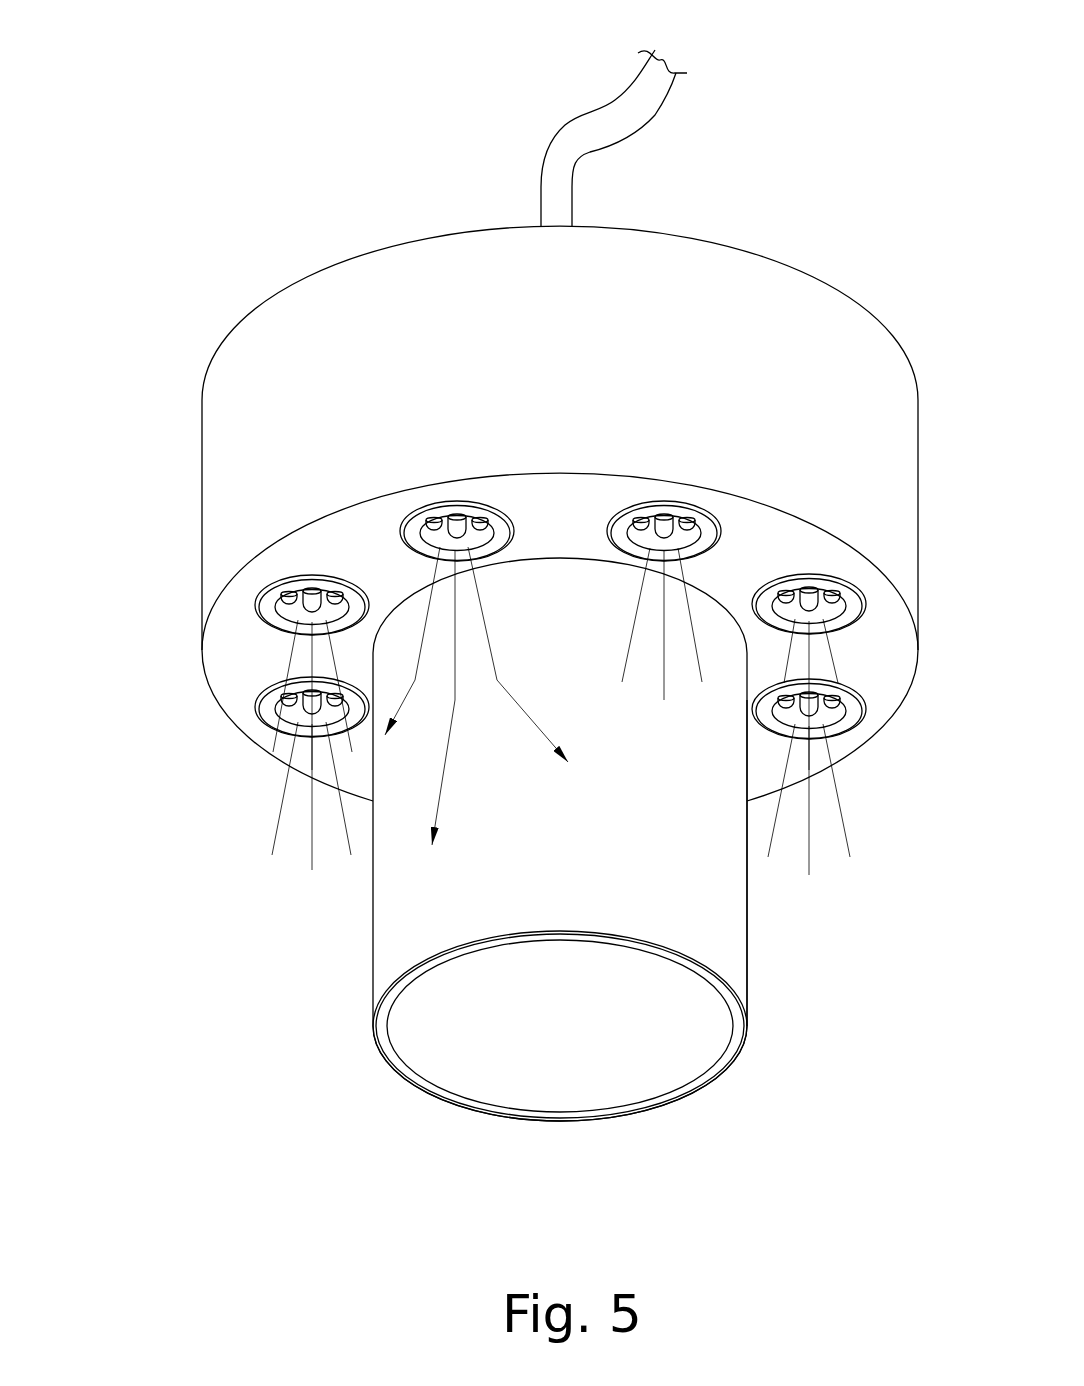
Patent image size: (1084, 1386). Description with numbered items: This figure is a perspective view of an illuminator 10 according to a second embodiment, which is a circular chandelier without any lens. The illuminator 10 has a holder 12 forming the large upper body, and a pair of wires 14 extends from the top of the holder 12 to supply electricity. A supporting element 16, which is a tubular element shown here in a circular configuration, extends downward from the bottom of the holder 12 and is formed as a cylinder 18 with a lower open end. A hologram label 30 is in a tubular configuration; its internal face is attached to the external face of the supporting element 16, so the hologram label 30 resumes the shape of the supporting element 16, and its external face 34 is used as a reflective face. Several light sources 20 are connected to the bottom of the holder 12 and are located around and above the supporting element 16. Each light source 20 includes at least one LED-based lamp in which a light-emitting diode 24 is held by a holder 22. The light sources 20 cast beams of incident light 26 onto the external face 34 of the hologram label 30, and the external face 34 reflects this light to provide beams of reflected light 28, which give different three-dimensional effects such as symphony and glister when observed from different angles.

The illuminator 10 is at (260, 243).
The holder 12 is at (773, 287).
The pair of wires 14 is at (612, 115).
The supporting element 16 is at (653, 1125).
The cylinder 18 is at (385, 1043).
The light source 20 is at (138, 485).
The holder 22 is at (270, 583).
The light-emitting diode 24 is at (298, 618).
The beams of incident light 26 is at (277, 829).
The beams of reflected light 28 is at (537, 730).
The hologram label 30 is at (382, 1050).
The external face 34 is at (720, 928).